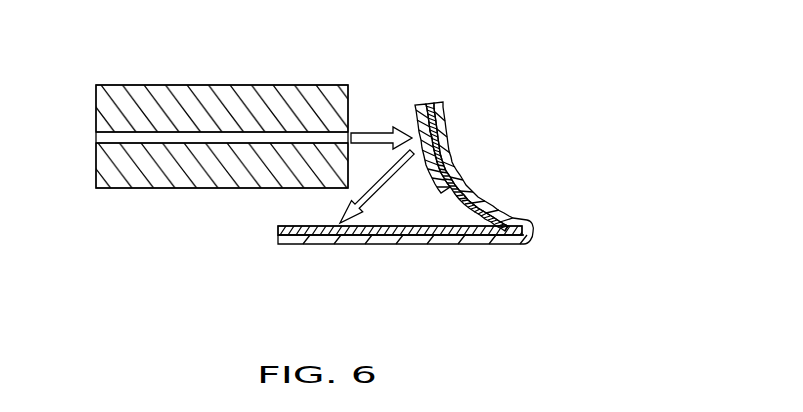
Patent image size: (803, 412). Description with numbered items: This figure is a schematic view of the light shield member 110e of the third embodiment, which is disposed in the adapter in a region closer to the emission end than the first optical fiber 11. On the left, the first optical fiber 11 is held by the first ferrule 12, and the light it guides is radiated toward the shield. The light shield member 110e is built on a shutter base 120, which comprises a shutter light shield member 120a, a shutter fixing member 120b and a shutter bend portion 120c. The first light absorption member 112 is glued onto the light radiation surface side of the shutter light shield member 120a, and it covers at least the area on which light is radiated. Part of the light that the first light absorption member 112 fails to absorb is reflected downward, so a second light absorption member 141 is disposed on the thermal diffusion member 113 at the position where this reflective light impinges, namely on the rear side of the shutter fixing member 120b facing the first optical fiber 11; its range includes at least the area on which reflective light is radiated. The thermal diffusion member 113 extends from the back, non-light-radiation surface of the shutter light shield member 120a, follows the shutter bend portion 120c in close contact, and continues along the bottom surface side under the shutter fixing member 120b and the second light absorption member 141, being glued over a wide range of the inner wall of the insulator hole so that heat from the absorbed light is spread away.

The first optical fiber 11 is at (102, 139).
The first ferrule 12 is at (102, 94).
The light shield member 110e is at (568, 115).
The first light absorption member 112 is at (414, 113).
The thermal diffusion member 113 is at (473, 173).
The shutter base 120 is at (431, 101).
The shutter light shield member 120a is at (446, 127).
The shutter fixing member 120b is at (429, 238).
The shutter bend portion 120c is at (538, 231).
The second light absorption member 141 is at (311, 238).